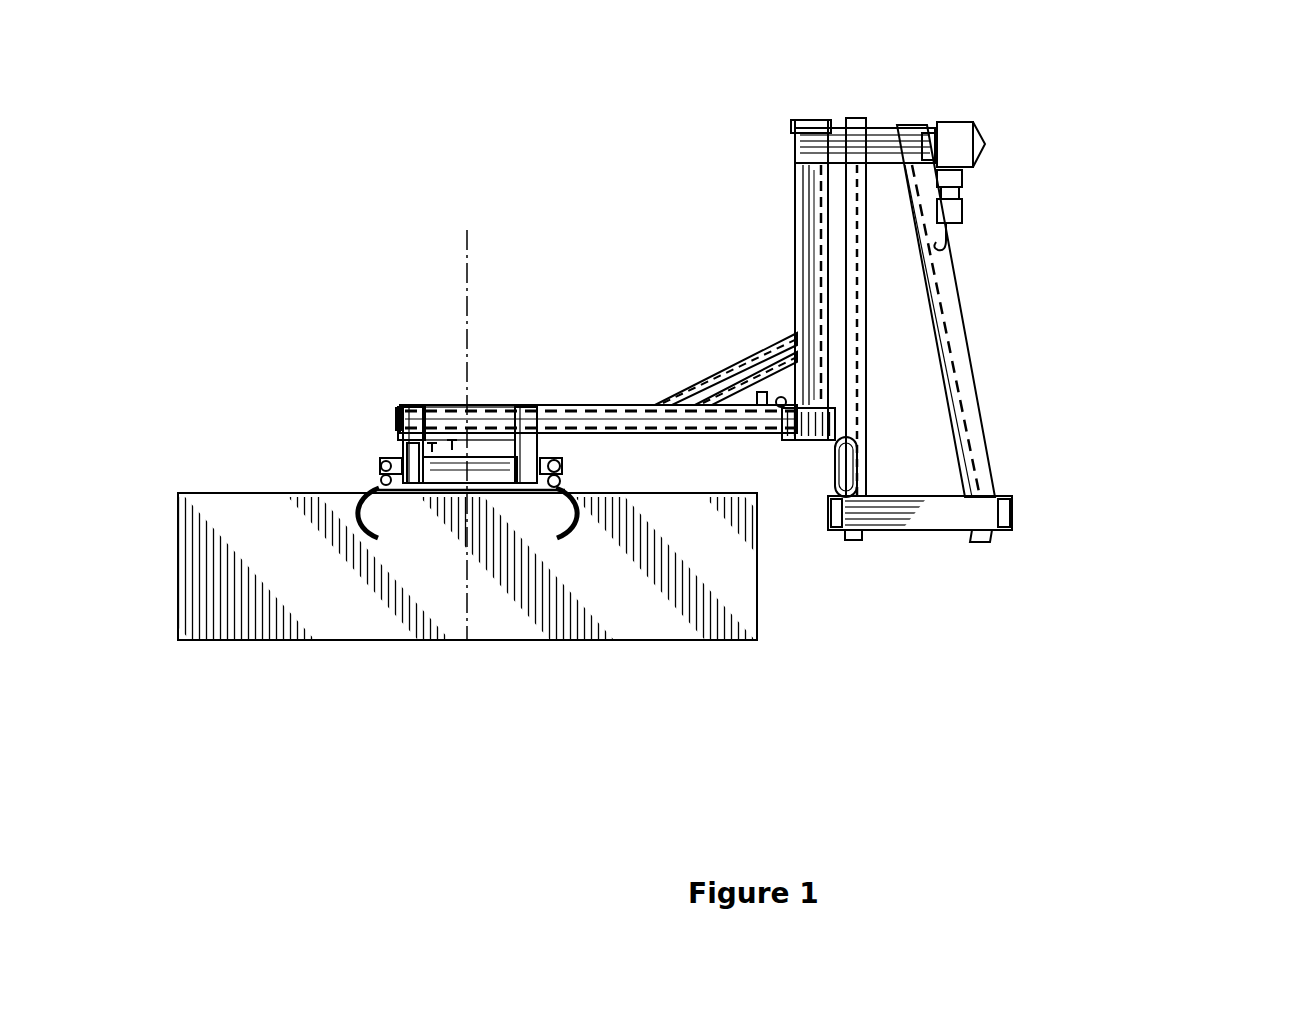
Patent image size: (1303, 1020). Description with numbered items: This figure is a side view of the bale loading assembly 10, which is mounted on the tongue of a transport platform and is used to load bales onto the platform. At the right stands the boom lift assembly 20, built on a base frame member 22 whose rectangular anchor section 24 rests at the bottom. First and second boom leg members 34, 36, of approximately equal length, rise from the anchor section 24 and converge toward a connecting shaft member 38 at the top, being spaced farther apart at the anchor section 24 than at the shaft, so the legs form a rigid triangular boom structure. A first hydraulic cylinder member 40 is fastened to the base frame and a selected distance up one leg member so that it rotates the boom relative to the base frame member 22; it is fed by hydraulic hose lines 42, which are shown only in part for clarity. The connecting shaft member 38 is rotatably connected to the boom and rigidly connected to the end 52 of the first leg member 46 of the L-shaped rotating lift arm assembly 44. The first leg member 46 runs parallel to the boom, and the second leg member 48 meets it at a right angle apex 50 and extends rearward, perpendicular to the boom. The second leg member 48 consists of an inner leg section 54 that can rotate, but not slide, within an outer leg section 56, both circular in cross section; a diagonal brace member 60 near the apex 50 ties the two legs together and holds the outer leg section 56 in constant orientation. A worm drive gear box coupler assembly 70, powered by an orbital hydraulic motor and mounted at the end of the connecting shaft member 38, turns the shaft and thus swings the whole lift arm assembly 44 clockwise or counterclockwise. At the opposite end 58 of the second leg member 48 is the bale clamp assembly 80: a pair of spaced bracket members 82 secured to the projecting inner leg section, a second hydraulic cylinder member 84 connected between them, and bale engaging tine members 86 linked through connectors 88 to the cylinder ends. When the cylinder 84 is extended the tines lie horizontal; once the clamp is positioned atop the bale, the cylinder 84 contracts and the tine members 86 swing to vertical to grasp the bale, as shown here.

The bale loading assembly 10 is at (670, 364).
The boom lift assembly 20 is at (886, 301).
The base frame member 22 is at (927, 554).
The anchor section 24 is at (1013, 514).
The first boom leg member 34 is at (856, 250).
The second boom leg member 36 is at (940, 313).
The connecting shaft member 38 is at (880, 138).
The first hydraulic cylinder member 40 is at (835, 462).
The hydraulic hose lines 42 is at (958, 248).
The L-shaped rotating lift arm assembly 44 is at (596, 325).
The first leg member 46 is at (812, 246).
The second leg member 48 is at (596, 385).
The right angle apex 50 is at (778, 405).
The end opposite the apex 52 is at (815, 198).
The inner leg section 54 is at (447, 428).
The outer leg section 56 is at (672, 433).
The opposite end 58 is at (573, 428).
The diagonal brace member 60 is at (740, 382).
The worm drive gear box coupler assembly 70 is at (950, 124).
The bale clamp assembly 80 is at (425, 438).
The bracket members 82 is at (403, 440).
The second hydraulic cylinder member 84 is at (440, 486).
The bale engaging tine members 86 is at (360, 527).
The connectors 88 is at (378, 478).